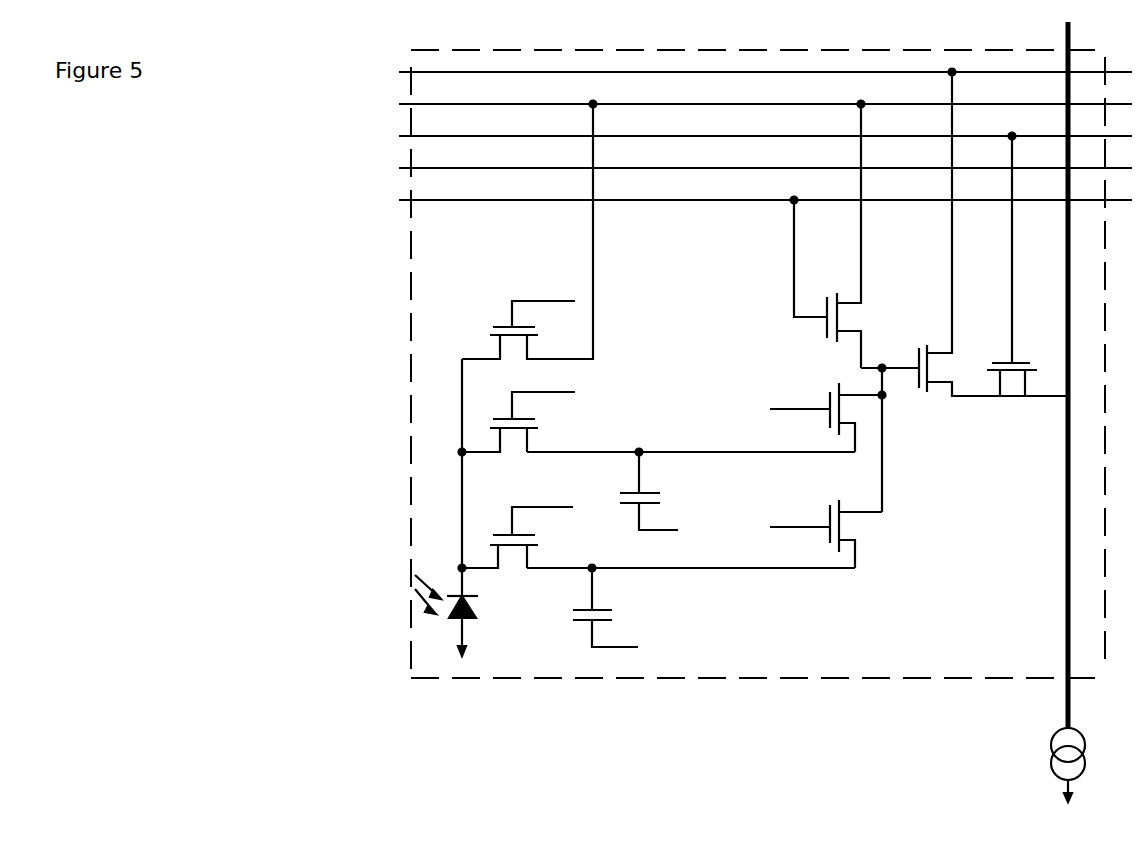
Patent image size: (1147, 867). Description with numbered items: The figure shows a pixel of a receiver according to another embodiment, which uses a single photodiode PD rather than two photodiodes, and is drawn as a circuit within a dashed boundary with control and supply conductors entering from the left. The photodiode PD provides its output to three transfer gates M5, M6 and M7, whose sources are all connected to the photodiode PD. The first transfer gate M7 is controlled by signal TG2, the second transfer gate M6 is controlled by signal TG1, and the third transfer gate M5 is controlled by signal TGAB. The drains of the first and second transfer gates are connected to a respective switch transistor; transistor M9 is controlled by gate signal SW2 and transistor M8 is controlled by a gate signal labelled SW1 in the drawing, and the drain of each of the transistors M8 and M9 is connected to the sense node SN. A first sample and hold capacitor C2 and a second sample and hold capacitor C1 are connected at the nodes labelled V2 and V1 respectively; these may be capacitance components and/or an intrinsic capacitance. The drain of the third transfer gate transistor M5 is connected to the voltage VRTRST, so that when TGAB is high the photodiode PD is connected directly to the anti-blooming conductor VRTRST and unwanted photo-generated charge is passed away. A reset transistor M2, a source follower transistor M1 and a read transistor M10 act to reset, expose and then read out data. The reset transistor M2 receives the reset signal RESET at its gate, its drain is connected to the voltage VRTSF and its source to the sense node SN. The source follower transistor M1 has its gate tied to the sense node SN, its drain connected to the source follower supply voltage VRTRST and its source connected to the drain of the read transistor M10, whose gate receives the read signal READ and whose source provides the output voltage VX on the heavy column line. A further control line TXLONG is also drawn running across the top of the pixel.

The voltage VRTSF is at (739, 72).
The source follower supply voltage VRTRST is at (733, 104).
The read signal READ is at (743, 136).
The long transfer control line TXLONG is at (731, 168).
The reset signal RESET is at (739, 200).
The output voltage VX is at (1058, 412).
The third transfer gate transistor M5 is at (529, 230).
The anti blooming signal TGAB is at (543, 288).
The second transfer gate M6 is at (517, 424).
The signal TG1 is at (543, 381).
The first transfer gate M7 is at (516, 539).
The signal TG2 is at (542, 496).
The photodiode PD is at (459, 507).
The first storage node V1 is at (691, 439).
The second sample and hold capacitor C1 is at (658, 490).
The second storage node V2 is at (691, 555).
The first sample and hold capacitor C2 is at (611, 606).
The reset transistor M2 is at (831, 235).
The sense node SN is at (890, 428).
The source follower transistor M1 is at (993, 233).
The read transistor M10 is at (1001, 265).
The transistor M8 is at (858, 412).
The first switch signal SW1 is at (800, 401).
The transistor M9 is at (856, 529).
The gate signal SW2 is at (800, 517).